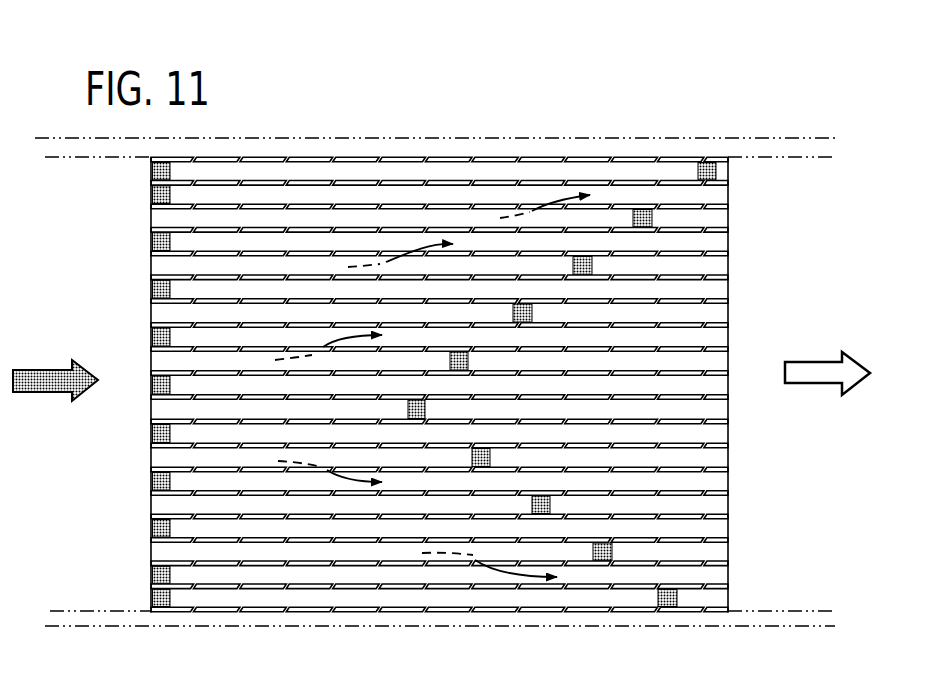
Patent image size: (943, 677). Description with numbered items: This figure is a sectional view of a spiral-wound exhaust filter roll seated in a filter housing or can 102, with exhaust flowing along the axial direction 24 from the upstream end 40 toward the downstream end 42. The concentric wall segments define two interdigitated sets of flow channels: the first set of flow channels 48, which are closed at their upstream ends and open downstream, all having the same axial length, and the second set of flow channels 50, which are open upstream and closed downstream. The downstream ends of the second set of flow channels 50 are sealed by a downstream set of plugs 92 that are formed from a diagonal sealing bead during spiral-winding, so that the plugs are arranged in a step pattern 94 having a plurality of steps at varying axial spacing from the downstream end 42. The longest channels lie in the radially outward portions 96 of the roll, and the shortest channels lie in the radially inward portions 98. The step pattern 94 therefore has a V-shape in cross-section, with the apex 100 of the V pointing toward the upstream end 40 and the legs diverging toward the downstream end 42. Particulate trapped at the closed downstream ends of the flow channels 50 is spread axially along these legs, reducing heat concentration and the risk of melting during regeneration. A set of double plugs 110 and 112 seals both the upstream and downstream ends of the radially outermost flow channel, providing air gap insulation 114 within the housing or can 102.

The axial direction 24 is at (33, 390).
The upstream end 40 is at (363, 411).
The downstream end 42 is at (728, 317).
The first set of flow channels 48 is at (188, 483).
The second set of flow channels 50 is at (322, 547).
The downstream set of plugs 92 is at (532, 317).
The step pattern 94 is at (516, 296).
The radially outward portions 96 is at (118, 213).
The radially inward portions 98 is at (123, 352).
The apex 100 is at (313, 405).
The filter housing or can 102 is at (745, 140).
The double plug 110 is at (170, 598).
The double plug 112 is at (657, 598).
The air gap insulation 114 is at (360, 598).